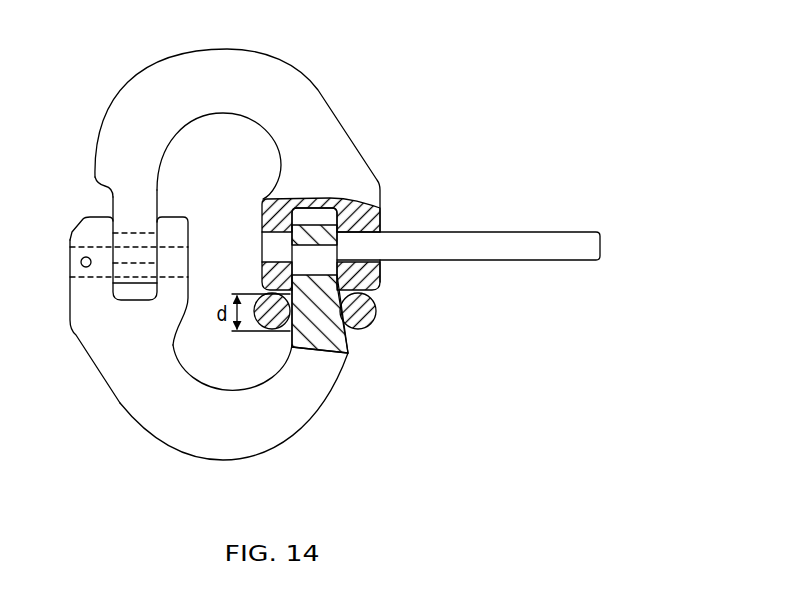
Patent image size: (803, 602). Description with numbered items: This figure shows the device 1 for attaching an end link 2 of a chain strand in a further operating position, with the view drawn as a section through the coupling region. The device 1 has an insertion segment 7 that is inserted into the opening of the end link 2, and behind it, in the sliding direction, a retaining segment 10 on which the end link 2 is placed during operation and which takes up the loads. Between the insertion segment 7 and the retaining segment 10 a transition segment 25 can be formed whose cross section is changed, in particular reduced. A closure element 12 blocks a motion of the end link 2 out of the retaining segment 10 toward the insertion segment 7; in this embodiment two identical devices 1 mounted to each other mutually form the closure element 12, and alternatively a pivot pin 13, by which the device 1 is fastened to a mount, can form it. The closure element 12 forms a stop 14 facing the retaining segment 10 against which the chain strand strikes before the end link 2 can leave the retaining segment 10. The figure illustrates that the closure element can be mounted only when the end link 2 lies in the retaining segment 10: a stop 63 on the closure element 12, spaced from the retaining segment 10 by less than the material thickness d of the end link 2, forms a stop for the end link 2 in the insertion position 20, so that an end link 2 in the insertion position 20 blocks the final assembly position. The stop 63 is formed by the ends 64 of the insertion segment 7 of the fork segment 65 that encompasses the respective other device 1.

The device 1 is at (240, 249).
The end link 2 is at (364, 317).
The insertion segment 7 is at (362, 275).
The retaining segment 10 is at (304, 418).
The closure element 12 is at (468, 224).
The pivot pin 13 is at (537, 239).
The stop 14 is at (387, 283).
The insertion position 20 is at (373, 343).
The transition segment 25 is at (275, 345).
The stop 63 is at (351, 323).
The ends of the insertion segment 64 is at (350, 263).
The fork segment 65 is at (383, 171).